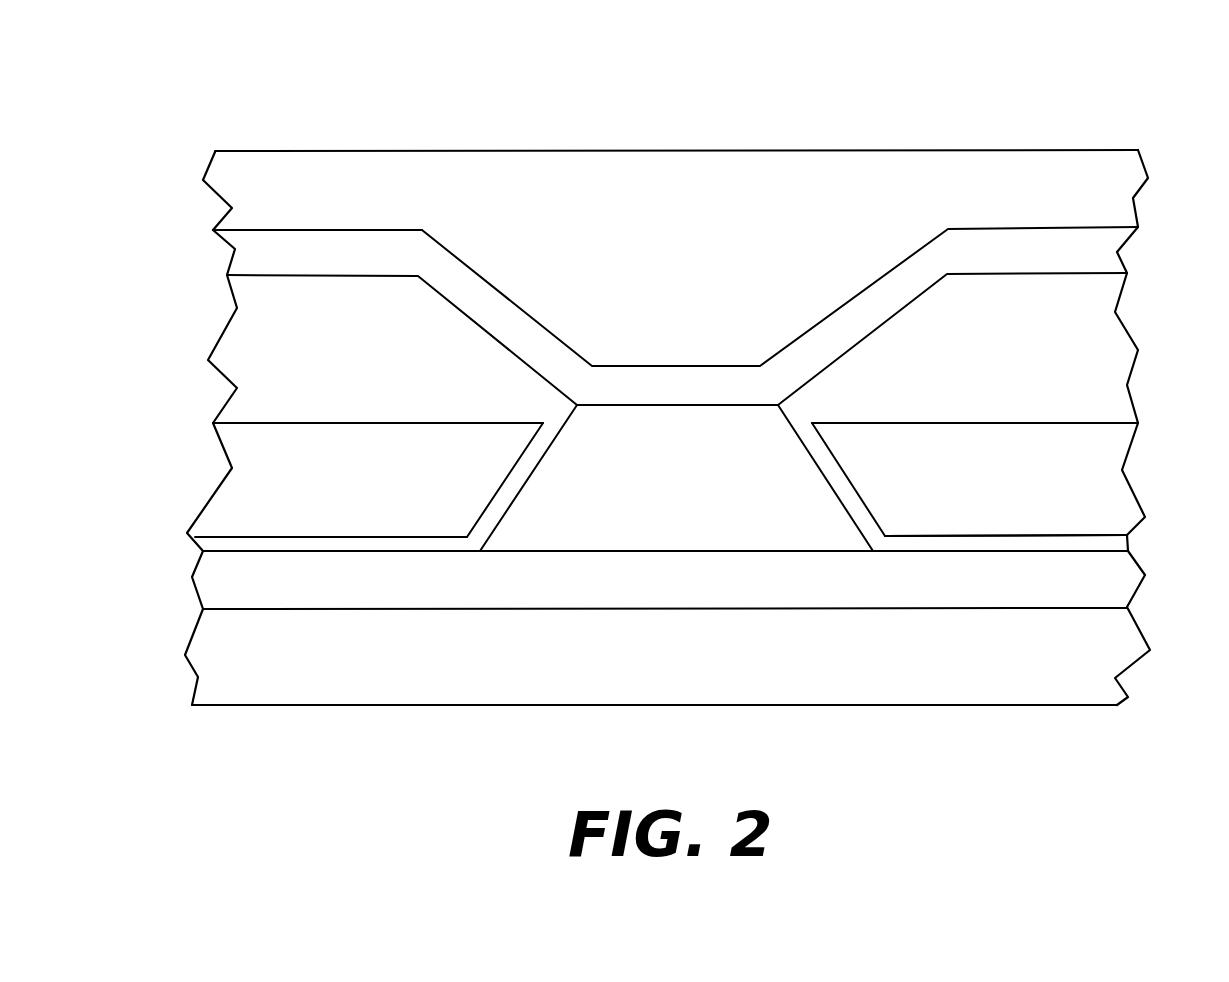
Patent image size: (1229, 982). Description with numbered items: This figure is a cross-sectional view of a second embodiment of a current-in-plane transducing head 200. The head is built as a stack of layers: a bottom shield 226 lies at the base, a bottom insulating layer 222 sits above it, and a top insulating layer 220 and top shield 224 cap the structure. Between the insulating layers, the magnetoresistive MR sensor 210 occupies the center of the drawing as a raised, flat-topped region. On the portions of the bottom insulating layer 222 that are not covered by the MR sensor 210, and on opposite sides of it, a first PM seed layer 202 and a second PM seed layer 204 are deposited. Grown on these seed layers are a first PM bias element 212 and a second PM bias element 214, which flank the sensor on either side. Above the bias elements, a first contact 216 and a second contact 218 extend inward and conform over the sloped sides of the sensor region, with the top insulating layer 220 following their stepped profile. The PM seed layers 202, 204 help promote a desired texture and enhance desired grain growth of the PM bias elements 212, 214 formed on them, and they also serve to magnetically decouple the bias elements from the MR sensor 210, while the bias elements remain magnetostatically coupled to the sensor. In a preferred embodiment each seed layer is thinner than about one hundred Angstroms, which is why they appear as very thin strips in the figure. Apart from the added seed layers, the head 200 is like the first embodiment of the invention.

The CIP transducing head 200 is at (358, 124).
The first PM seed layer 202 is at (205, 547).
The second PM seed layer 204 is at (1115, 542).
The MR sensor 210 is at (673, 405).
The first PM bias element 212 is at (285, 483).
The second PM bias element 214 is at (1100, 457).
The first contact 216 is at (297, 367).
The second contact 218 is at (1085, 338).
The top insulating layer 220 is at (1078, 253).
The bottom insulating layer 222 is at (1112, 575).
The top shield 224 is at (1098, 193).
The bottom shield 226 is at (1107, 653).